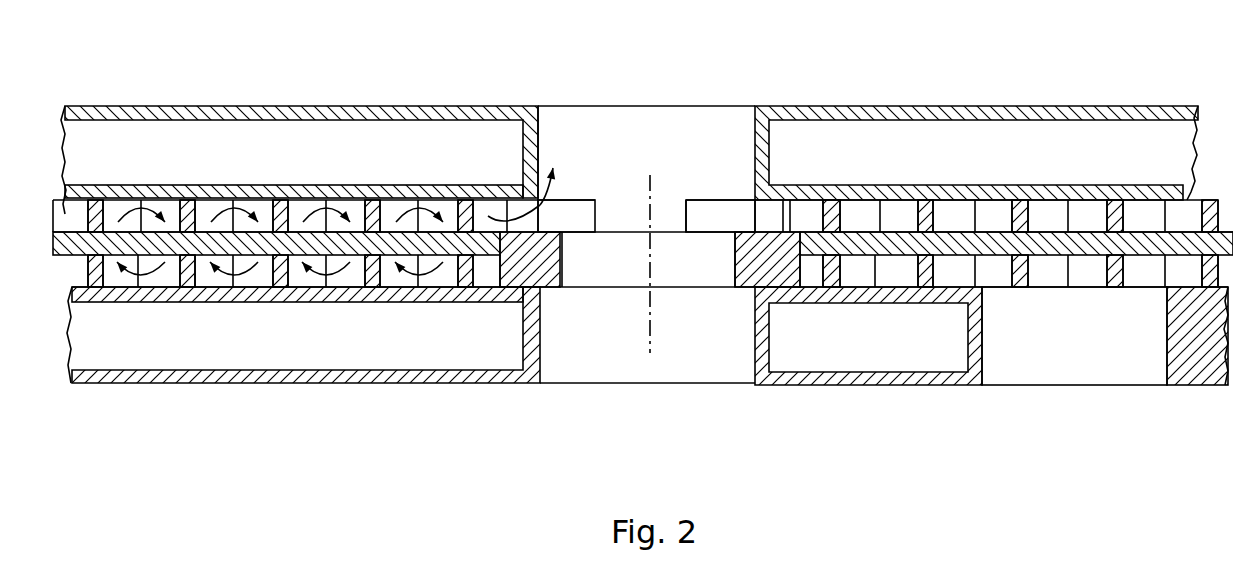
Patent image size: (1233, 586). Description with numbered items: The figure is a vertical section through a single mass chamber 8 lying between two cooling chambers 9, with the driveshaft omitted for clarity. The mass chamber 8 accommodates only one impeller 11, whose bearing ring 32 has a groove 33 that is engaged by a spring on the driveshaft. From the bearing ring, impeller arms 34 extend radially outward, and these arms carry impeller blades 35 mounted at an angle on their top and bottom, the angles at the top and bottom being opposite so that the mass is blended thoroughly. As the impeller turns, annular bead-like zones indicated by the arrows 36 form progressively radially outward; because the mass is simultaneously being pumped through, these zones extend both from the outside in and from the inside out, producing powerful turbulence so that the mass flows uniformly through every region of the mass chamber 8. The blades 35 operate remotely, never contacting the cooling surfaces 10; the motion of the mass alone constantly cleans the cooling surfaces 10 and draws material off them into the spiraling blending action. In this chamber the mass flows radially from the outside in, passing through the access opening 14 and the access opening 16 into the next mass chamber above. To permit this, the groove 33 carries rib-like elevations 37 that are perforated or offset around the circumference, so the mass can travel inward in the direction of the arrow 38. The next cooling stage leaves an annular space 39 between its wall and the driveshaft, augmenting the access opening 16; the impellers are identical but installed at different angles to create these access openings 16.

The mass chamber 8 is at (352, 278).
The cooling chamber 9 is at (835, 148).
The cooling surface 10 is at (215, 192).
The impeller 11 is at (887, 263).
The access opening 14 is at (1031, 370).
The access opening 16 is at (546, 217).
The bearing ring 32 is at (515, 270).
The groove 33 is at (558, 287).
The impeller arm 34 is at (300, 242).
The impeller blade 35 is at (173, 214).
The arrows indicating annular bead-like zones 36 is at (338, 215).
The rib-like elevation 37 is at (518, 212).
The arrow 38 is at (500, 215).
The annular space 39 is at (577, 148).